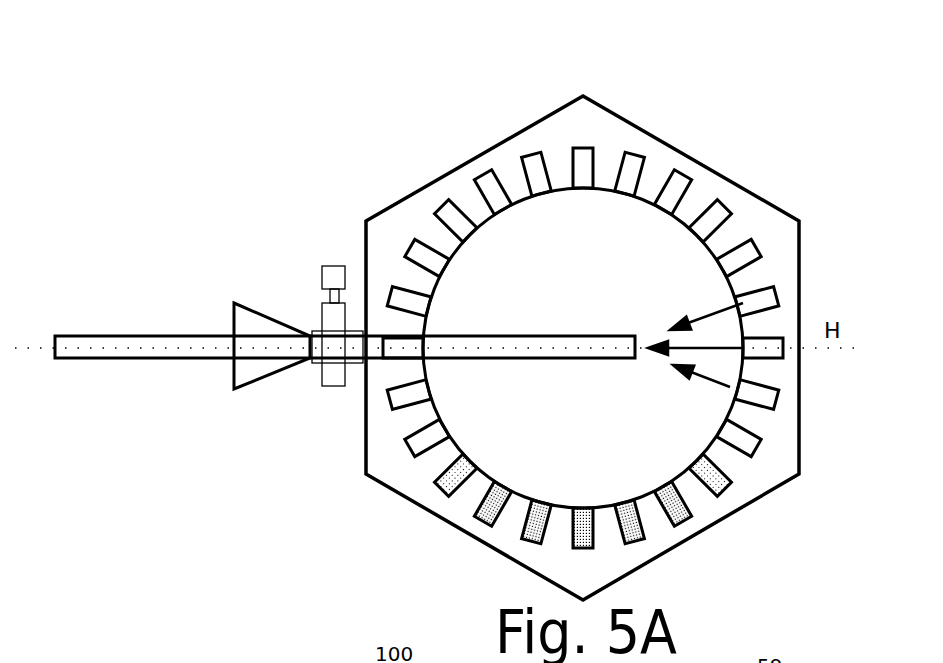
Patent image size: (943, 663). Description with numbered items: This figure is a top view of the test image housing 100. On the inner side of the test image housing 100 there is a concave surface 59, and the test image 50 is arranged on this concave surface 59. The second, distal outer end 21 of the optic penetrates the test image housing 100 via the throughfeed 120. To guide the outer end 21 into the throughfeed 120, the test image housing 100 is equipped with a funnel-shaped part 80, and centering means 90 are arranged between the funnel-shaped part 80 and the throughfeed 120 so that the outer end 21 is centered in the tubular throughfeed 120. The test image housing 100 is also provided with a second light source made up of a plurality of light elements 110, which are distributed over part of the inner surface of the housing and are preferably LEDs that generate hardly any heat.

The distal outer end of the optic 21 is at (548, 333).
The test image 50 is at (742, 330).
The concave surface 59 is at (688, 219).
The funnel-shaped part 80 is at (253, 303).
The centering means 90 is at (328, 263).
The test image housing 100 is at (478, 152).
The light elements 110 is at (628, 165).
The throughfeed 120 is at (387, 362).